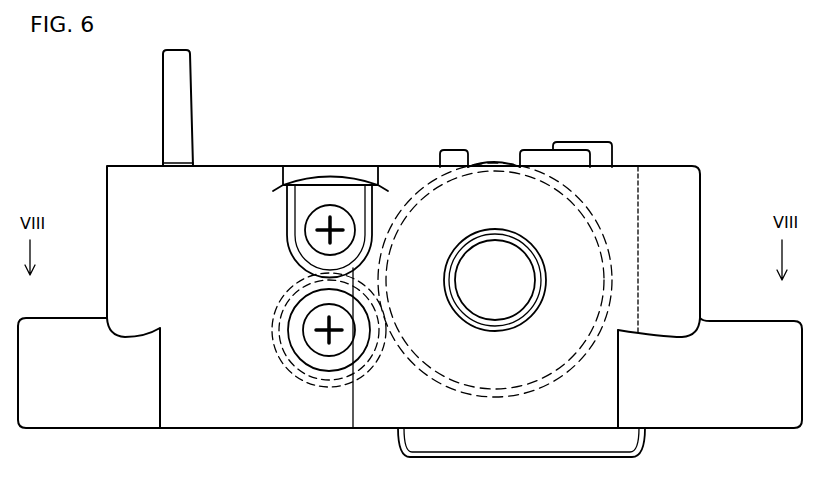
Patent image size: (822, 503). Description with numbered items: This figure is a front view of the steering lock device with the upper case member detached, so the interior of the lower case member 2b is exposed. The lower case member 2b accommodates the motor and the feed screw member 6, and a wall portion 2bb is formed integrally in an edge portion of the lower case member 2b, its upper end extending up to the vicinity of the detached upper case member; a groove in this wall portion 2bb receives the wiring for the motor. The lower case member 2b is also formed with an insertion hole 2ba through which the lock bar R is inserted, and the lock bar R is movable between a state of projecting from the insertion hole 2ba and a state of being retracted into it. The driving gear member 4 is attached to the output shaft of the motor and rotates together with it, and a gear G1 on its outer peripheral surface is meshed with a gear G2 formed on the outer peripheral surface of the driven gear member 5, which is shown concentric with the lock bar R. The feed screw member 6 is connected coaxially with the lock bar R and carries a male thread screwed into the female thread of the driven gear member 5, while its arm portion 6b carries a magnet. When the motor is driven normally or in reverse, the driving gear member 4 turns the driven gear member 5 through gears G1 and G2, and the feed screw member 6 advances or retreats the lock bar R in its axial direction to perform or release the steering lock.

The lower case member 2b is at (112, 190).
The wall portion 2bb is at (168, 88).
The insertion hole 2ba is at (517, 252).
The driving gear member 4 is at (323, 385).
The driven gear member 5 is at (505, 400).
The feed screw member 6 is at (601, 136).
The arm portion 6b is at (575, 142).
The gear G1 is at (300, 383).
The gear G2 is at (418, 165).
The lock bar R is at (495, 255).